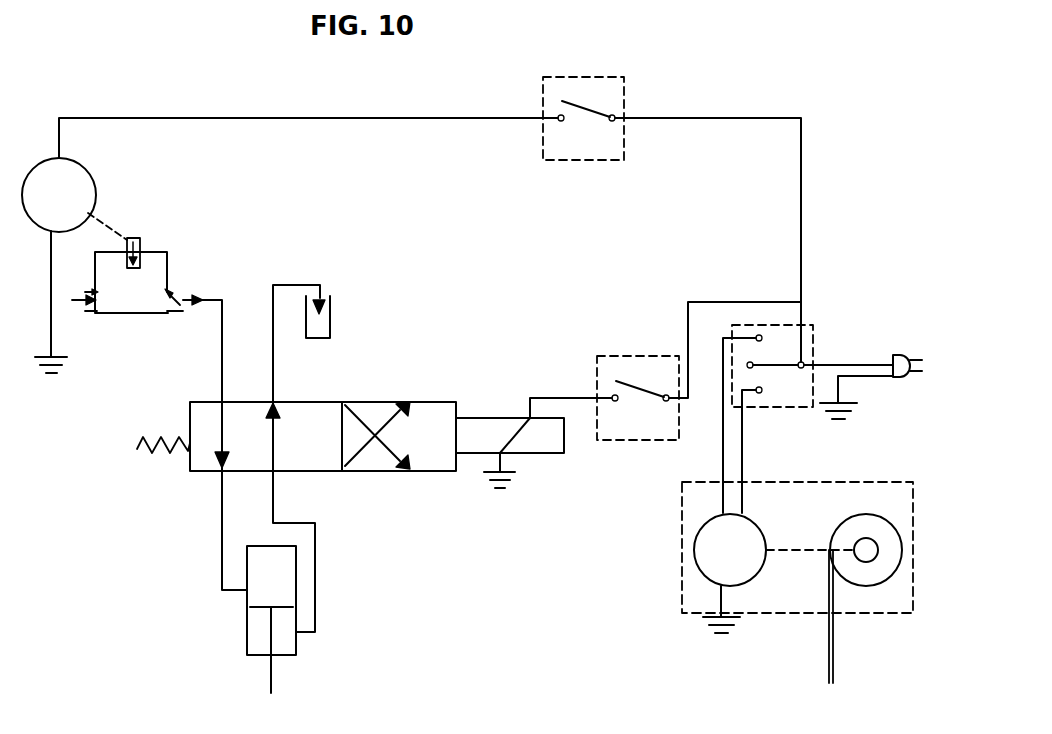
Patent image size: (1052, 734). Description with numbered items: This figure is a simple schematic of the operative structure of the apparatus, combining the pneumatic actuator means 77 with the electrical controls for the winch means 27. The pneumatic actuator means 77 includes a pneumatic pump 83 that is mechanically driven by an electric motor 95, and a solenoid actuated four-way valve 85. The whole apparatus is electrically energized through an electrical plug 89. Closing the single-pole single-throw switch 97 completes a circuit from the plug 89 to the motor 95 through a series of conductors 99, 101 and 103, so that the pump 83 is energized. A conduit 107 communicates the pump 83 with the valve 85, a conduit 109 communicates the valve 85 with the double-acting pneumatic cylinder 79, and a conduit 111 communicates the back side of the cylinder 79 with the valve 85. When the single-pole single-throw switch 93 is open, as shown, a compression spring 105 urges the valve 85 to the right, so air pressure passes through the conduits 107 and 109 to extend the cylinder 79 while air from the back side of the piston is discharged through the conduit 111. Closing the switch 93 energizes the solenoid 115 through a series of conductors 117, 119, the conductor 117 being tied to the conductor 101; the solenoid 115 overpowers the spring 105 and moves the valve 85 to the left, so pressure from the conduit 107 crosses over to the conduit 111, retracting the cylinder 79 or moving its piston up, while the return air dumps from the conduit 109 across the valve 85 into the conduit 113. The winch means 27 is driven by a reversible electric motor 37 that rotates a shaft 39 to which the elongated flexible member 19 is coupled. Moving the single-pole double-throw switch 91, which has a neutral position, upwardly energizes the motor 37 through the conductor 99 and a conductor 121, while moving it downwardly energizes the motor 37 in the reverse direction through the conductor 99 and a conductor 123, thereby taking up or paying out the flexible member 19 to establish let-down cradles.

The elongated flexible member 19 is at (828, 643).
The winch means 27 is at (653, 660).
The electric motor 37 is at (705, 555).
The shaft 39 is at (866, 560).
The pneumatic actuator means 77 is at (129, 71).
The double-acting pneumatic cylinder 79 is at (257, 621).
The pneumatic pump 83 is at (157, 239).
The four-way valve 85 is at (400, 500).
The electrical plug 89 is at (905, 355).
The single-pole double-throw switch 91 is at (842, 316).
The single-pole single-throw switch 93 is at (668, 330).
The electric motor 95 is at (85, 182).
The single-pole single-throw switch 97 is at (637, 66).
The conductor 99 is at (843, 365).
The conductor 101 is at (803, 197).
The conductor 103 is at (370, 120).
The compression spring 105 is at (152, 456).
The conduit 107 is at (222, 370).
The conduit 109 is at (222, 527).
The conduit 111 is at (315, 537).
The conduit 113 is at (285, 285).
The solenoid 115 is at (549, 453).
The conductor 117 is at (733, 302).
The conductor 119 is at (565, 398).
The conductor 121 is at (723, 445).
The conductor 123 is at (742, 472).